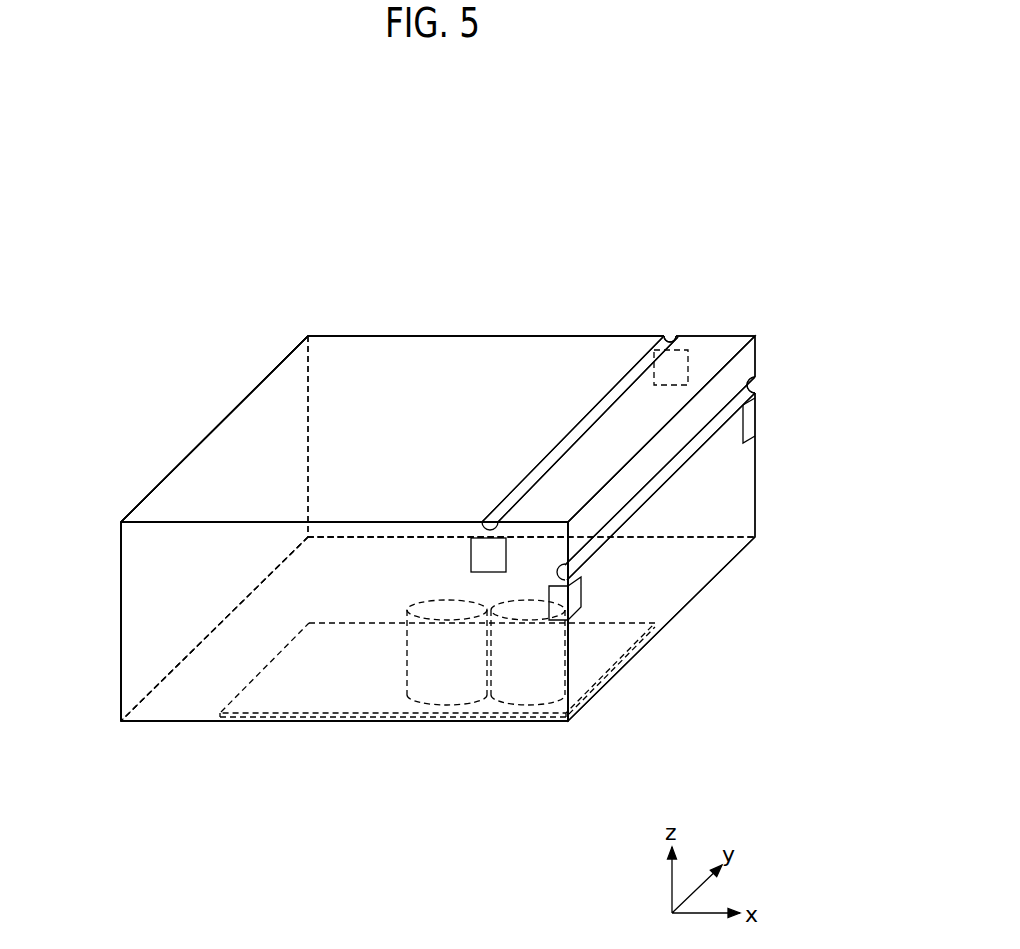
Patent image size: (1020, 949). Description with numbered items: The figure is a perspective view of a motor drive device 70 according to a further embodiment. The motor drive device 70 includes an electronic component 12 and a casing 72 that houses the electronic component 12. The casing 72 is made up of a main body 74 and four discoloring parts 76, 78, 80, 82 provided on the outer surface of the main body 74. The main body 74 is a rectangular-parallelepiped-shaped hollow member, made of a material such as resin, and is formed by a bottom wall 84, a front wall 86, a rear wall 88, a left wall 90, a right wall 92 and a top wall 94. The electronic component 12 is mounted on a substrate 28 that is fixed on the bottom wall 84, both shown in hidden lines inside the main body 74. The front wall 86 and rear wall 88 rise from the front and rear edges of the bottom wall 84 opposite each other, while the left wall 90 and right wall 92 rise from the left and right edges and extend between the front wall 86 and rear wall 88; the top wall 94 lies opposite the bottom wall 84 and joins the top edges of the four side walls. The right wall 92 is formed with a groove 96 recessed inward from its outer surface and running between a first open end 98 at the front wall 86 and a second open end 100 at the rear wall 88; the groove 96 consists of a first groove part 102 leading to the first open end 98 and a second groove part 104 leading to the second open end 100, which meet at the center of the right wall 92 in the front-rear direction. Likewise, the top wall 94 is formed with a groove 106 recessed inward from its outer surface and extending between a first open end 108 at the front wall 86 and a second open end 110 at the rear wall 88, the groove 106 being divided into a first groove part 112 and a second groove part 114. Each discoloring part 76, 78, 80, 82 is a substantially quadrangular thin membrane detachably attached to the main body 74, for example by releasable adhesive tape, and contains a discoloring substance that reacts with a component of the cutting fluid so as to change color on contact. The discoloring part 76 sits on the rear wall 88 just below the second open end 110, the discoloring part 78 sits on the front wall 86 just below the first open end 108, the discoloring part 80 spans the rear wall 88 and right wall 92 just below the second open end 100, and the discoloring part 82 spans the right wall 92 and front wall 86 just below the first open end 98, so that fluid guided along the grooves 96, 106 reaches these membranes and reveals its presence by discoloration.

The motor drive device 70 is at (747, 173).
The casing 72 is at (220, 383).
The main body 74 is at (392, 336).
The discoloring part 76 is at (487, 553).
The discoloring part 78 is at (675, 368).
The discoloring part 80 is at (575, 597).
The discoloring part 82 is at (757, 421).
The bottom wall 84 is at (265, 628).
The front wall 86 is at (472, 405).
The rear wall 88 is at (162, 622).
The left wall 90 is at (205, 493).
The right wall 92 is at (742, 505).
The top wall 94 is at (348, 360).
The groove 96 is at (670, 462).
The first open end 98 is at (757, 386).
The second open end 100 is at (557, 576).
The first groove part 102 is at (705, 426).
The second groove part 104 is at (628, 518).
The groove 106 is at (585, 417).
The first open end 108 is at (670, 335).
The second open end 110 is at (488, 528).
The first groove part 112 is at (628, 385).
The second groove part 114 is at (529, 475).
The substrate 28 is at (343, 690).
The electronic component 12 is at (521, 676).